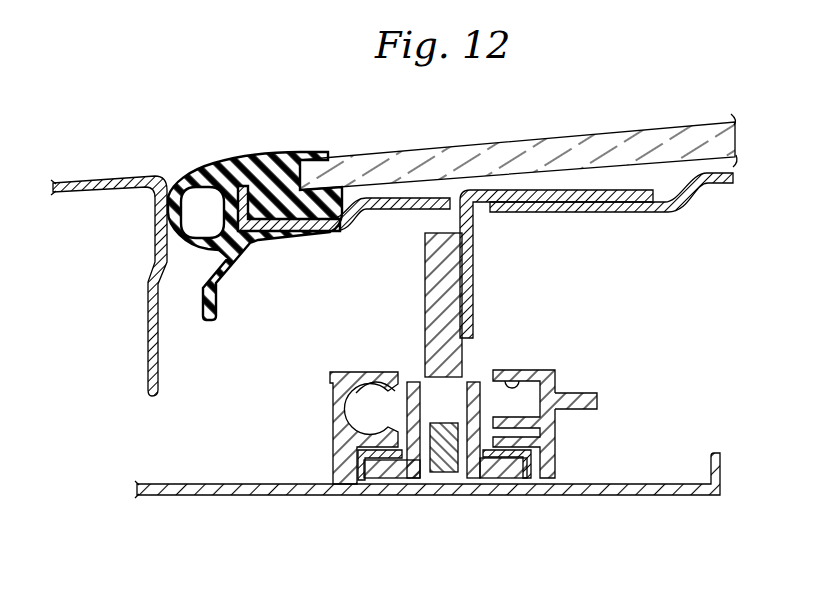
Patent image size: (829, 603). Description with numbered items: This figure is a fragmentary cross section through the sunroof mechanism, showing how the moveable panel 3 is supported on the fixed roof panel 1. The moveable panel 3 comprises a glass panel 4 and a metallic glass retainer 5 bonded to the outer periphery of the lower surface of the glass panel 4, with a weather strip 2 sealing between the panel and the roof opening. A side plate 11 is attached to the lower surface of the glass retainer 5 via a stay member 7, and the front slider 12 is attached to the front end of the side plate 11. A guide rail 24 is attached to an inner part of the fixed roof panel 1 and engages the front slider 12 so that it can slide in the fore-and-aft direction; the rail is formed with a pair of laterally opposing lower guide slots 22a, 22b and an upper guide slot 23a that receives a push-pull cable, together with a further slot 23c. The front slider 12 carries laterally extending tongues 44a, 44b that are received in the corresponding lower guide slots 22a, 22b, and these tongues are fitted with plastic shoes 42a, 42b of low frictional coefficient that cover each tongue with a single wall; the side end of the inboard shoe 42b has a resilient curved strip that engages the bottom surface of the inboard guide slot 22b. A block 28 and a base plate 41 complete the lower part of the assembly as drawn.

The fixed roof panel 1 is at (78, 186).
The weather strip 2 is at (166, 192).
The moveable panel 3 is at (752, 128).
The glass panel 4 is at (485, 148).
The glass retainer 5 is at (622, 212).
The stay member 7 is at (474, 270).
The side plate 11 is at (428, 297).
The front slider 12 is at (421, 394).
The lower guide slot 22a is at (377, 487).
The lower guide slot 22b is at (527, 474).
The upper guide slot 23a is at (358, 387).
The recess 23c is at (525, 372).
The guide rail 24 is at (565, 373).
The spacer block 28 is at (433, 473).
The base plate 41 is at (221, 485).
The shoe 42a is at (348, 424).
The inboard shoe 42b is at (548, 442).
The front inboard tongue 44a is at (406, 476).
The front tongue 44b is at (497, 476).